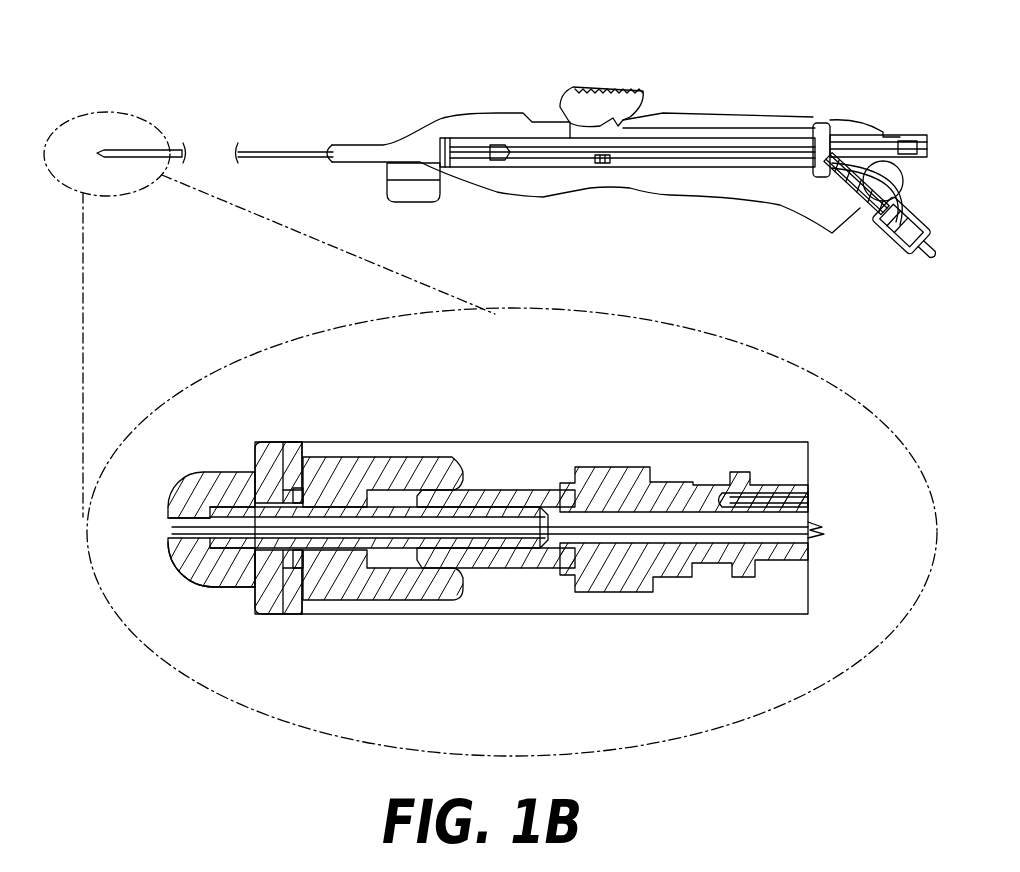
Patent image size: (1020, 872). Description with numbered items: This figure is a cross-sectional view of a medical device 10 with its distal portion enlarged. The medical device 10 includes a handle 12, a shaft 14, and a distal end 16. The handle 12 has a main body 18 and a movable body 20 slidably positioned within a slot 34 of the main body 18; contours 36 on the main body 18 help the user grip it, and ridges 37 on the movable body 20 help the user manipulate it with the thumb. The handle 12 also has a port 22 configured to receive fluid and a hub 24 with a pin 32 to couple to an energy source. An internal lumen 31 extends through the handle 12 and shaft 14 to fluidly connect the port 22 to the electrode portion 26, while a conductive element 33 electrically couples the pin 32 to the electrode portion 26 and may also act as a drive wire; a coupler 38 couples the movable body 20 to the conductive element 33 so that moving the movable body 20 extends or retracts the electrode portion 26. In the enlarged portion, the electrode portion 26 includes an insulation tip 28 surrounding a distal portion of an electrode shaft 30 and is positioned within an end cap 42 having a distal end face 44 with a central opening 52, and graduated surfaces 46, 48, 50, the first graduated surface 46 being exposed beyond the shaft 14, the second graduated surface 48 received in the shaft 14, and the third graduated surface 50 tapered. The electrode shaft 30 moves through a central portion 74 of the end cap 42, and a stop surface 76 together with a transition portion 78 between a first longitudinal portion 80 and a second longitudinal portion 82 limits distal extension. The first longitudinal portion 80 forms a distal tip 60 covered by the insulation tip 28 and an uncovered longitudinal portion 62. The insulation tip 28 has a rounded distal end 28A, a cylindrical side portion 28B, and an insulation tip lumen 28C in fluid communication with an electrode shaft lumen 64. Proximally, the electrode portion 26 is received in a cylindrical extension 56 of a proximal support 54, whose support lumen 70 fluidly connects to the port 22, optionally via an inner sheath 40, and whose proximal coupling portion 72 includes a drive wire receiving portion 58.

The medical device 10 is at (164, 56).
The handle 12 is at (755, 240).
The shaft 14 is at (289, 150).
The distal end 16 is at (150, 171).
The main body 18 is at (792, 116).
The movable body 20 is at (638, 96).
The port 22 is at (920, 136).
The hub 24 is at (912, 224).
The electrode portion 26 is at (100, 172).
The insulation tip 28 is at (191, 592).
The distal end 28A is at (174, 558).
The side portion 28B is at (230, 590).
The insulation tip lumen 28C is at (177, 527).
The electrode shaft 30 is at (402, 568).
The internal lumen 31 is at (441, 166).
The pin 32 is at (928, 252).
The conductive element 33 is at (530, 160).
The slot 34 is at (546, 104).
The contours 36 is at (652, 184).
The ridges 37 is at (574, 89).
The coupler 38 is at (700, 135).
The inner sheath 40 is at (696, 460).
The end cap 42 is at (298, 488).
The distal end face 44 is at (260, 446).
The first graduated surface 46 is at (264, 600).
The second graduated surface 48 is at (322, 603).
The third graduated surface 50 is at (450, 600).
The central opening 52 is at (296, 574).
The proximal support 54 is at (588, 468).
The cylindrical extension 56 is at (515, 495).
The drive wire receiving portion 58 is at (764, 480).
The distal tip 60 is at (240, 490).
The longitudinal portion 62 is at (336, 486).
The electrode shaft lumen 64 is at (469, 520).
The support lumen 70 is at (632, 574).
The proximal coupling portion 72 is at (776, 584).
The central portion 74 is at (368, 576).
The stop surface 76 is at (292, 470).
The transition portion 78 is at (364, 486).
The first longitudinal portion 80 is at (312, 482).
The second longitudinal portion 82 is at (402, 484).